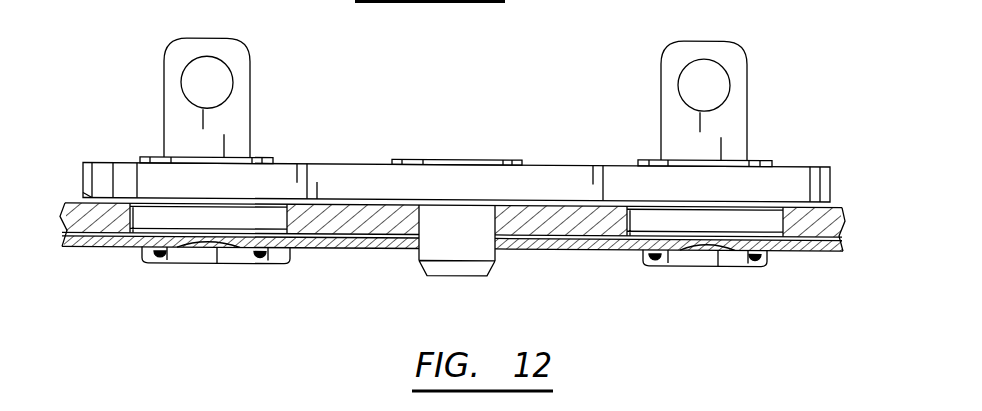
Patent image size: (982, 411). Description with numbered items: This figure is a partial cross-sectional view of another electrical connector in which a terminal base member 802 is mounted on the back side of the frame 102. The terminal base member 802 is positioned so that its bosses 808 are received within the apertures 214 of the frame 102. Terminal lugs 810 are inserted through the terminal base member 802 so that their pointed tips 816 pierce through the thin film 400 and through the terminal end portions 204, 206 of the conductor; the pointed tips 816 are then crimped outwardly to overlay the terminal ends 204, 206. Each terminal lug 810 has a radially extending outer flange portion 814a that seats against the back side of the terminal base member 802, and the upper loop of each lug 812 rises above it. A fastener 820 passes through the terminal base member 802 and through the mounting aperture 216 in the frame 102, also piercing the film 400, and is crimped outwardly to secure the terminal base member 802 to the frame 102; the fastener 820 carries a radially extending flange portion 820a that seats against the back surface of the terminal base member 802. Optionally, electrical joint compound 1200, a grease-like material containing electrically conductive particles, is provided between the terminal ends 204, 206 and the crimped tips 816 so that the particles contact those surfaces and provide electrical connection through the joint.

The frame 102 is at (72, 210).
The terminal end portion 204 is at (770, 257).
The terminal end portion 206 is at (280, 251).
The aperture 214 is at (285, 220).
The mounting aperture 216 is at (421, 225).
The thin film 400 is at (408, 248).
The terminal base member 802 is at (540, 178).
The boss 808 is at (140, 218).
The terminal lug 810 is at (453, 83).
The loop 812 is at (177, 52).
The outer flange portion 814a is at (148, 157).
The pointed tip 816 is at (150, 258).
The fastener 820 is at (495, 255).
The flange portion 820a is at (445, 157).
The electrical joint compound 1200 is at (167, 263).